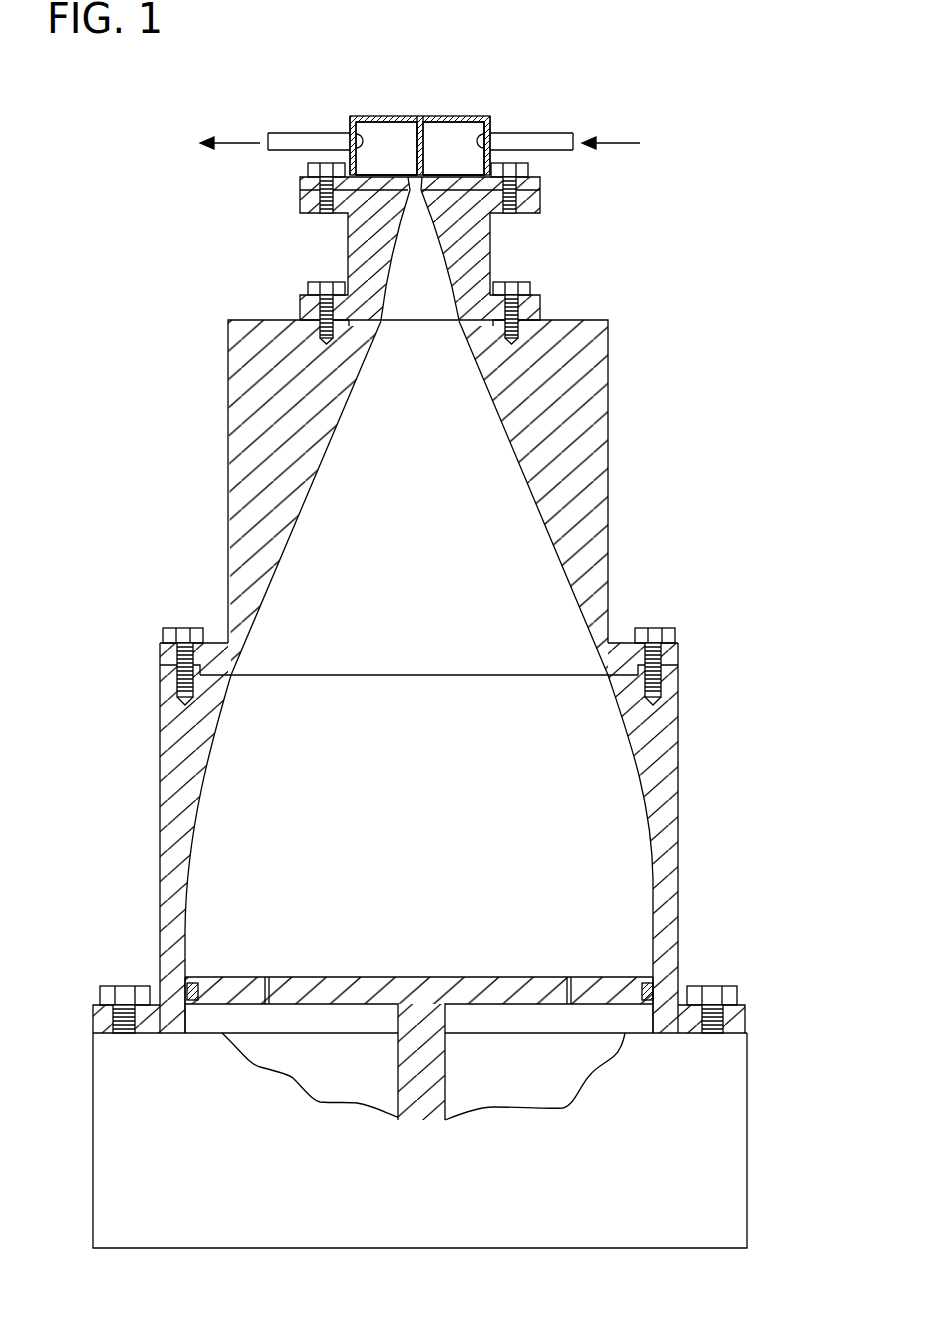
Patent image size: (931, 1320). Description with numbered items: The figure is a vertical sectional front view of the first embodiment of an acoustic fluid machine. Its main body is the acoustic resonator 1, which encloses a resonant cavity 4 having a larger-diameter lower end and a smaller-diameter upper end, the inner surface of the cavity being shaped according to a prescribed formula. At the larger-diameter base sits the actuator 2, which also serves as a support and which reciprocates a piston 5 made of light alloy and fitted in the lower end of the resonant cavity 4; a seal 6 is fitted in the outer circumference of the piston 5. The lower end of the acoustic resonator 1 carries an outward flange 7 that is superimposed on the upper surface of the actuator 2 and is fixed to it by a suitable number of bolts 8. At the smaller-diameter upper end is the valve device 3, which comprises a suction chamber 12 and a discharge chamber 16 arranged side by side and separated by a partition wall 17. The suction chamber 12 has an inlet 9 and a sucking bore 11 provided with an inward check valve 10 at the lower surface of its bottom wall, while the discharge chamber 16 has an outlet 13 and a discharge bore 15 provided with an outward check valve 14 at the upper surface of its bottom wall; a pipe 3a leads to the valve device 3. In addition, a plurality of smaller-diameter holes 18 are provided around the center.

The acoustic resonator 1 is at (609, 452).
The actuator 2 is at (748, 1150).
The valve device 3 is at (532, 108).
The outlet pipe 3a is at (491, 154).
The resonant cavity 4 is at (290, 539).
The piston 5 is at (321, 977).
The seal 6 is at (647, 985).
The outward flange 7 is at (742, 1020).
The bolts 8 is at (713, 986).
The inlet 9 is at (489, 118).
The inward check valve 10 is at (433, 200).
The sucking bore 11 is at (463, 152).
The suction chamber 12 is at (478, 148).
The outlet 13 is at (351, 123).
The outward check valve 14 is at (400, 173).
The discharge bore 15 is at (402, 197).
The discharge chamber 16 is at (377, 147).
The partition wall 17 is at (431, 175).
The smaller-diameter holes 18 is at (265, 982).